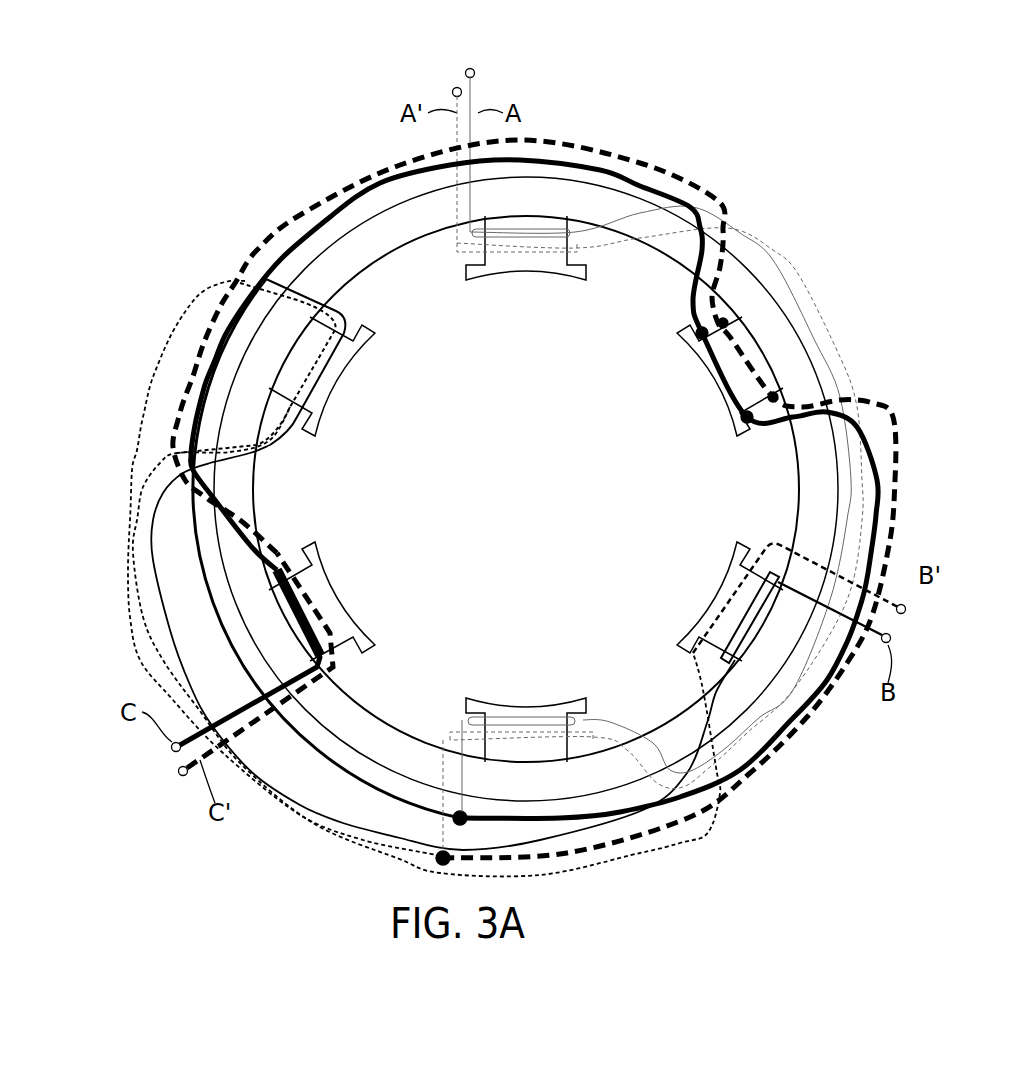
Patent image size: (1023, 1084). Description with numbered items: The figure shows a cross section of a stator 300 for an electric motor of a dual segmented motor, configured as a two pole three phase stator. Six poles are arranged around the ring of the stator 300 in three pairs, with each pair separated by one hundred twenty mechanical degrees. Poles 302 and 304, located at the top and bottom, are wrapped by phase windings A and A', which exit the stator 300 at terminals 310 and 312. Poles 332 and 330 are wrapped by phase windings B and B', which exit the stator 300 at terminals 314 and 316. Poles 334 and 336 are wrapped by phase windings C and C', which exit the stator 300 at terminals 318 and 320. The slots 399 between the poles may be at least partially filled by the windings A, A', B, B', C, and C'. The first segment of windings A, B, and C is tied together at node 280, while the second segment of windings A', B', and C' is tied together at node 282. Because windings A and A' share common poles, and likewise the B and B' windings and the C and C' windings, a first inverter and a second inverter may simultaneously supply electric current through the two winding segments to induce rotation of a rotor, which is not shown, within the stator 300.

The node 280 is at (466, 814).
The node 282 is at (436, 860).
The stator 300 is at (768, 343).
The pole 302 is at (477, 282).
The pole 304 is at (484, 694).
The terminal 310 is at (478, 73).
The terminal 312 is at (457, 92).
The terminal 314 is at (905, 605).
The terminal 316 is at (876, 672).
The terminal 318 is at (172, 748).
The terminal 320 is at (180, 774).
The pole 330 is at (334, 407).
The pole 332 is at (685, 603).
The pole 334 is at (349, 598).
The pole 336 is at (712, 405).
The slots 399 is at (397, 293).